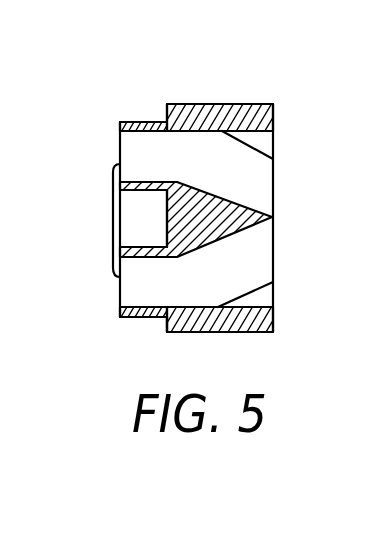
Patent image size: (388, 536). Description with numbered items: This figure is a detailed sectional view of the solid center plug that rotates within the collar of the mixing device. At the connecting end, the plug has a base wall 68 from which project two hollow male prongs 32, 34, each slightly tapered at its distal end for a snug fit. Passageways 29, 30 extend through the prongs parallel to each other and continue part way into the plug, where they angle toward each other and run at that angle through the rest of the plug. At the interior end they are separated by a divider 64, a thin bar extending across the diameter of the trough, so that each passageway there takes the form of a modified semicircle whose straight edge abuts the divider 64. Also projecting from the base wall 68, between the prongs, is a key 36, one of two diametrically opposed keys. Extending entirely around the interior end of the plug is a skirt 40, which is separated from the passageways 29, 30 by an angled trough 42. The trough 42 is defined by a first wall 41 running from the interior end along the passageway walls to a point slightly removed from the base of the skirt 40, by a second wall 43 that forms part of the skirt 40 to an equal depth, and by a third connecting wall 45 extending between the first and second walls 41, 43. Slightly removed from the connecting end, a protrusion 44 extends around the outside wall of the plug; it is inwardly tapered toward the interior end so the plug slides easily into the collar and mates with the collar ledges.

The passageway 29 is at (207, 160).
The passageway 30 is at (194, 298).
The hollow male prong 32 is at (140, 122).
The hollow male prong 34 is at (138, 318).
The key 36 is at (118, 237).
The skirt 40 is at (254, 331).
The first wall 41 is at (254, 292).
The angled trough 42 is at (258, 140).
The second wall 43 is at (263, 103).
The protrusion 44 is at (165, 333).
The third connecting wall 45 is at (219, 308).
The divider 64 is at (273, 218).
The base wall 68 is at (167, 215).